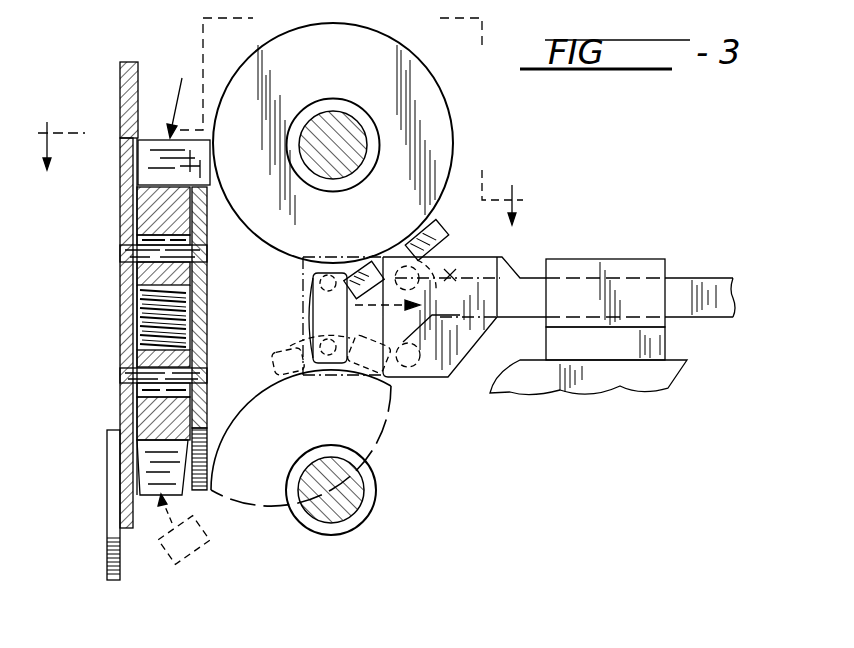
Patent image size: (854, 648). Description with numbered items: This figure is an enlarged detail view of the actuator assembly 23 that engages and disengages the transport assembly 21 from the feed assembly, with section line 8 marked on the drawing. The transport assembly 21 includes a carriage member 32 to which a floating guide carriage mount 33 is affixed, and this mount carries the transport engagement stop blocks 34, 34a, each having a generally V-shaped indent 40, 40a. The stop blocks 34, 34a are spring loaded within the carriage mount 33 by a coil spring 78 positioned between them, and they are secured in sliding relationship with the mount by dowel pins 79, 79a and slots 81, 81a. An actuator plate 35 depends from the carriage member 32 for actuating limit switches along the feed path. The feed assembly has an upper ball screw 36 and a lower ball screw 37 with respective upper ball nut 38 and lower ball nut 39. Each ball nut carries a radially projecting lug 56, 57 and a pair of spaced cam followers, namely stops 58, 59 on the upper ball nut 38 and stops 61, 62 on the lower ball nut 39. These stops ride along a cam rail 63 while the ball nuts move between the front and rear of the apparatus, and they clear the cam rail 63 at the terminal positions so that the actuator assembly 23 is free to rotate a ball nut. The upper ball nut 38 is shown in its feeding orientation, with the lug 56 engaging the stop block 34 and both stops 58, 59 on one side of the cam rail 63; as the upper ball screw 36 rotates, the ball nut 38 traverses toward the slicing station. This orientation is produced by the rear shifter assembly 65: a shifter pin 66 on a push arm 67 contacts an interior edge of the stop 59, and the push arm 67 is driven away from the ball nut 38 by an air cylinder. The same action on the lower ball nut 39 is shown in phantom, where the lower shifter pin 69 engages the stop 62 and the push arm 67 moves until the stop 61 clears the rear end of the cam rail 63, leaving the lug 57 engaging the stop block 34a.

The section line 8- 8 is at (285, 159).
The transport assembly 21 is at (106, 270).
The actuator assembly 23 is at (683, 380).
The carriage member 32 is at (128, 97).
The floating guide carriage mount 33 is at (200, 340).
The stop block 34 is at (146, 205).
The stop block 34a is at (150, 415).
The actuator plate 35 is at (113, 562).
The upper ball screw 36 is at (360, 150).
The lower ball screw 37 is at (345, 520).
The upper ball nut 38 is at (430, 100).
The lower ball nut 39 is at (447, 540).
The indent 40 is at (140, 172).
The indent 40a is at (160, 470).
The lug 56 is at (160, 155).
The lug 57 is at (210, 503).
The cam follower 58 is at (368, 262).
The cam follower 59 is at (433, 236).
The cam follower 61 is at (270, 370).
The cam follower 62 is at (348, 388).
The cam rail 63 is at (312, 305).
The rear shifter assembly 65 is at (602, 249).
The shifter pin 66 is at (441, 276).
The push arm 67 is at (468, 365).
The lower shifter pin 69 is at (312, 333).
The coil spring 78 is at (136, 322).
The dowel pin 79 is at (136, 252).
The dowel pin 79a is at (135, 374).
The slot 81 is at (134, 238).
The slot 81a is at (136, 390).